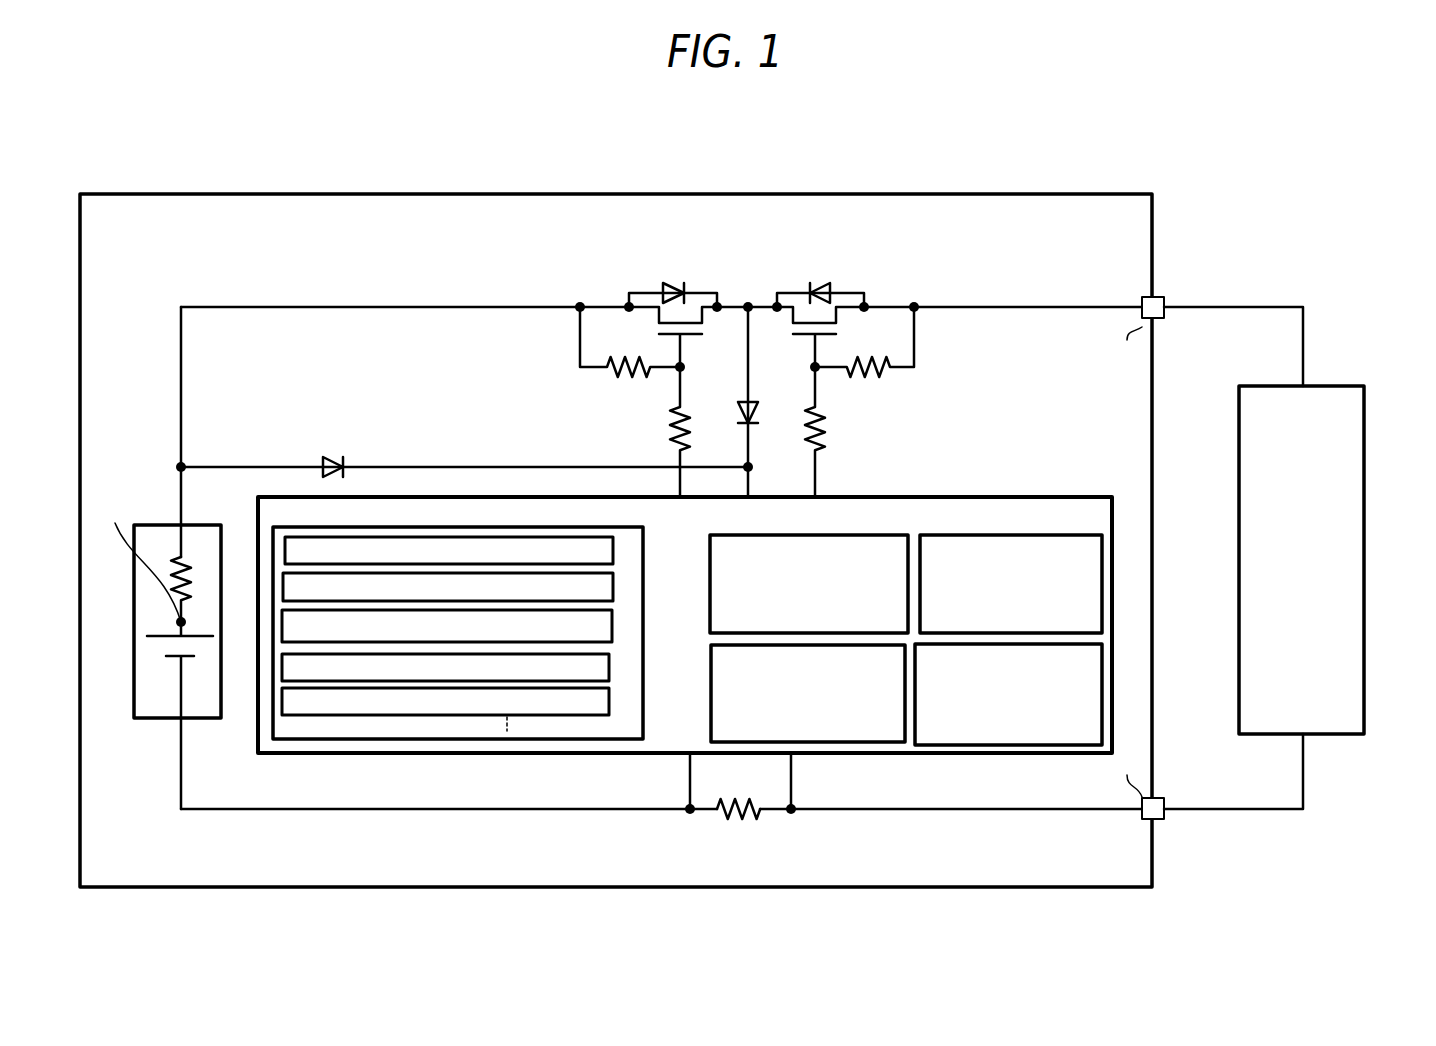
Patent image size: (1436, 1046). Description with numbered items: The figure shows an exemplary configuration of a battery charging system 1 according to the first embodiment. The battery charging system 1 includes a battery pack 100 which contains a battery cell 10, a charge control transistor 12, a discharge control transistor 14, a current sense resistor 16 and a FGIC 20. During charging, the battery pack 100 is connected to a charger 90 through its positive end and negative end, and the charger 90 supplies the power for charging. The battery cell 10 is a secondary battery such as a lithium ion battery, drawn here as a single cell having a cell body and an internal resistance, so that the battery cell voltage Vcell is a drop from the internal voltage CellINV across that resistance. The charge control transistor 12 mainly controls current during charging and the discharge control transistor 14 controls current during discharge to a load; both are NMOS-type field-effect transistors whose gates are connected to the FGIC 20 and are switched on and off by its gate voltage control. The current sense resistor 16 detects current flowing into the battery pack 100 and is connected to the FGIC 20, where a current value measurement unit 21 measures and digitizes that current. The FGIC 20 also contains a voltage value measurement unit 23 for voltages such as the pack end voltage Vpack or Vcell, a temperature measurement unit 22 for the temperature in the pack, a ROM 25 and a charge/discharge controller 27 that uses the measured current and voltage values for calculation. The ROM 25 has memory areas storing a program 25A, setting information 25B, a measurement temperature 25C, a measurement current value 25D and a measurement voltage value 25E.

The battery charging system 1 is at (1423, 138).
The battery pack 100 is at (423, 188).
The battery cell 10 is at (150, 718).
The charge control transistor 12 is at (697, 282).
The discharge control transistor 14 is at (812, 268).
The current sense resistor 16 is at (730, 828).
The FGIC 20 is at (946, 478).
The current value measurement unit 21 is at (818, 742).
The temperature measurement unit 22 is at (997, 533).
The voltage value measurement unit 23 is at (1102, 690).
The ROM 25 is at (597, 525).
The program 25A is at (613, 558).
The setting information 25B is at (613, 590).
The measurement temperature 25C is at (612, 621).
The measurement current value 25D is at (609, 663).
The measurement voltage value 25E is at (609, 700).
The charge/discharge controller 27 is at (817, 533).
The charger 90 is at (1317, 734).